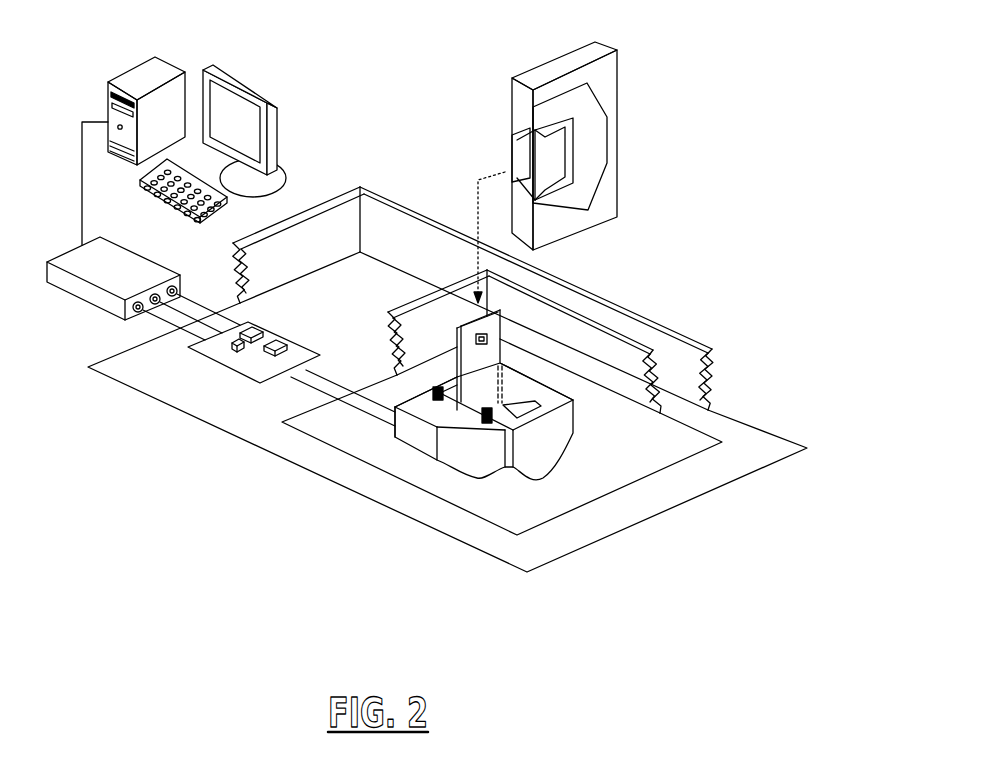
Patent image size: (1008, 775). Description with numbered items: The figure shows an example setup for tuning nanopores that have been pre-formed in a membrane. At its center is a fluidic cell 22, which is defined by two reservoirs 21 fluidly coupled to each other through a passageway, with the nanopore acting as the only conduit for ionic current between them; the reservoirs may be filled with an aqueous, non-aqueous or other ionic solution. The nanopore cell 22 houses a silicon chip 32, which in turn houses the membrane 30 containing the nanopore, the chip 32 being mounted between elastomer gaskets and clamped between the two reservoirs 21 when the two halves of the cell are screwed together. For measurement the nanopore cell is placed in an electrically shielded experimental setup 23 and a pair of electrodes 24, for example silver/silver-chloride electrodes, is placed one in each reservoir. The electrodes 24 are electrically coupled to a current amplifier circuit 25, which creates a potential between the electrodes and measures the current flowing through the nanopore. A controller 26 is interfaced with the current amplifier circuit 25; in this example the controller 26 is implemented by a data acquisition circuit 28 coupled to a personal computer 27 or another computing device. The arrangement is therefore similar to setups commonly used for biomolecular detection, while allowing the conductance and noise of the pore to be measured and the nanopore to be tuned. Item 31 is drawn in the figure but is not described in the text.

The reservoirs 21 is at (523, 407).
The fluidic cell 22 is at (590, 445).
The electrically shielded experimental setup 23 is at (695, 341).
The electrodes 24 is at (488, 420).
The current amplifier circuit 25 is at (280, 335).
The controller 26 is at (92, 52).
The personal computer 27 is at (172, 65).
The data acquisition circuit 28 is at (133, 253).
The membrane 30 is at (488, 341).
The fixture block 31 is at (617, 135).
The silicon chip 32 is at (503, 322).